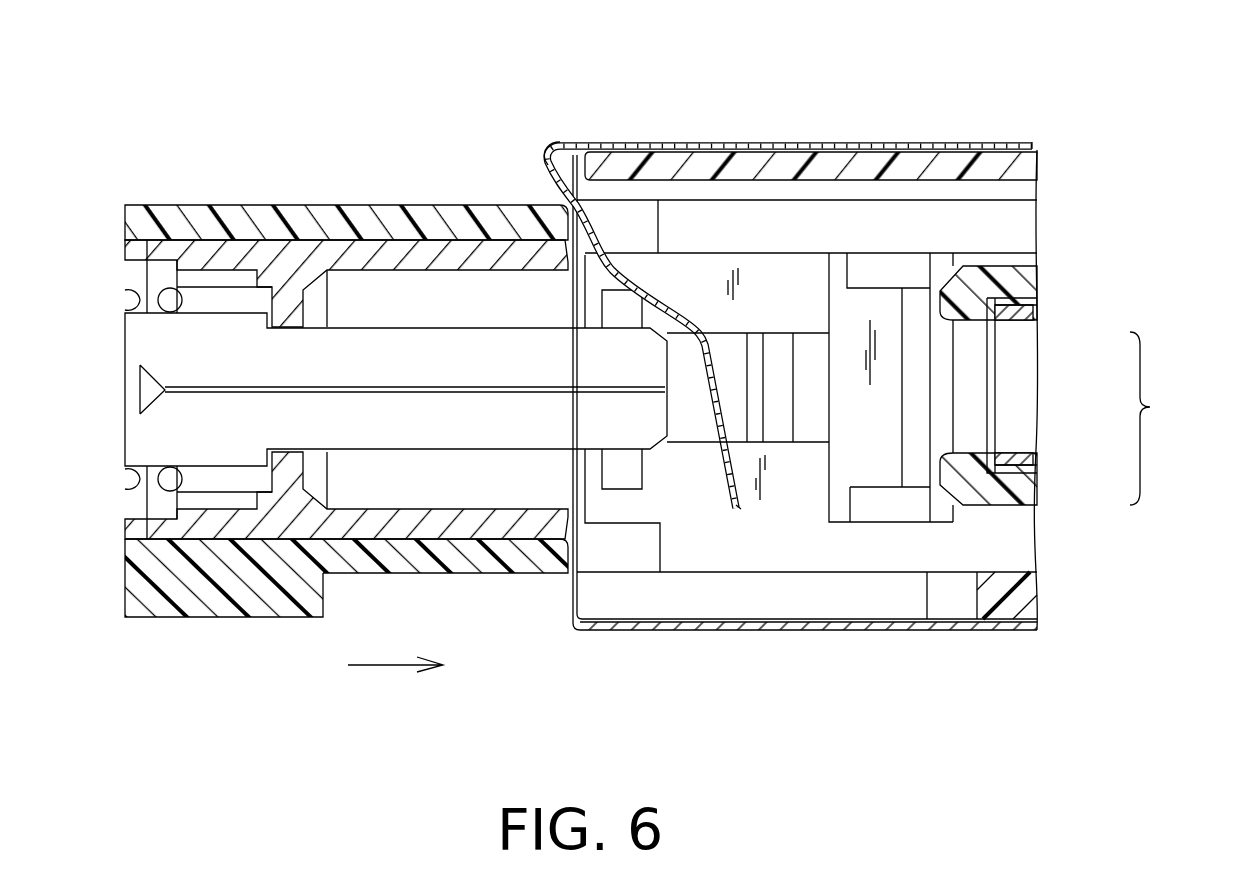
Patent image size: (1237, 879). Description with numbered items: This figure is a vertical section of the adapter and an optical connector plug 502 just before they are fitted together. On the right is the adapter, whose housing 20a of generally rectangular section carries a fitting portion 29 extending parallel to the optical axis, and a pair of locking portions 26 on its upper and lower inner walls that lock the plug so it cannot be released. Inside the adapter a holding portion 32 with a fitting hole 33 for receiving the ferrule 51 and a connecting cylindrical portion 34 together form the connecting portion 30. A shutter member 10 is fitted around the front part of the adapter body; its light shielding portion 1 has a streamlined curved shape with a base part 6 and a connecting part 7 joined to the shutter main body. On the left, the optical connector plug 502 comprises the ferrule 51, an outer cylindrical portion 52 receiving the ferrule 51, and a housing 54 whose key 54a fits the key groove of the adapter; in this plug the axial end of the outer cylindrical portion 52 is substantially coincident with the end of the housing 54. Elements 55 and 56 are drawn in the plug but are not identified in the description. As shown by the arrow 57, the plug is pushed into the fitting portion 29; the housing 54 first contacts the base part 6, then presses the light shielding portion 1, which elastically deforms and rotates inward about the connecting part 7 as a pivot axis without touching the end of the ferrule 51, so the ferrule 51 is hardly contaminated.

The light shielding portion 1 is at (665, 293).
The base part 6 is at (580, 203).
The connecting part 7 is at (542, 158).
The shutter member 10 is at (807, 140).
The housing 20a is at (662, 598).
The locking portions 26 is at (843, 385).
The fitting portion 29 is at (603, 545).
The connecting portion 30 is at (1171, 418).
The holding portion 32 is at (1018, 484).
The fitting hole 33 is at (966, 382).
The connecting cylindrical portion 34 is at (1022, 349).
The optical connector plug 502 is at (280, 200).
The ferrule 51 is at (390, 363).
The outer cylindrical portion 52 is at (458, 522).
The housing 54 is at (370, 575).
The key 54a is at (198, 578).
The bearing retainer 55 is at (244, 295).
The ball bearing 56 is at (170, 288).
The arrow 57 is at (392, 665).